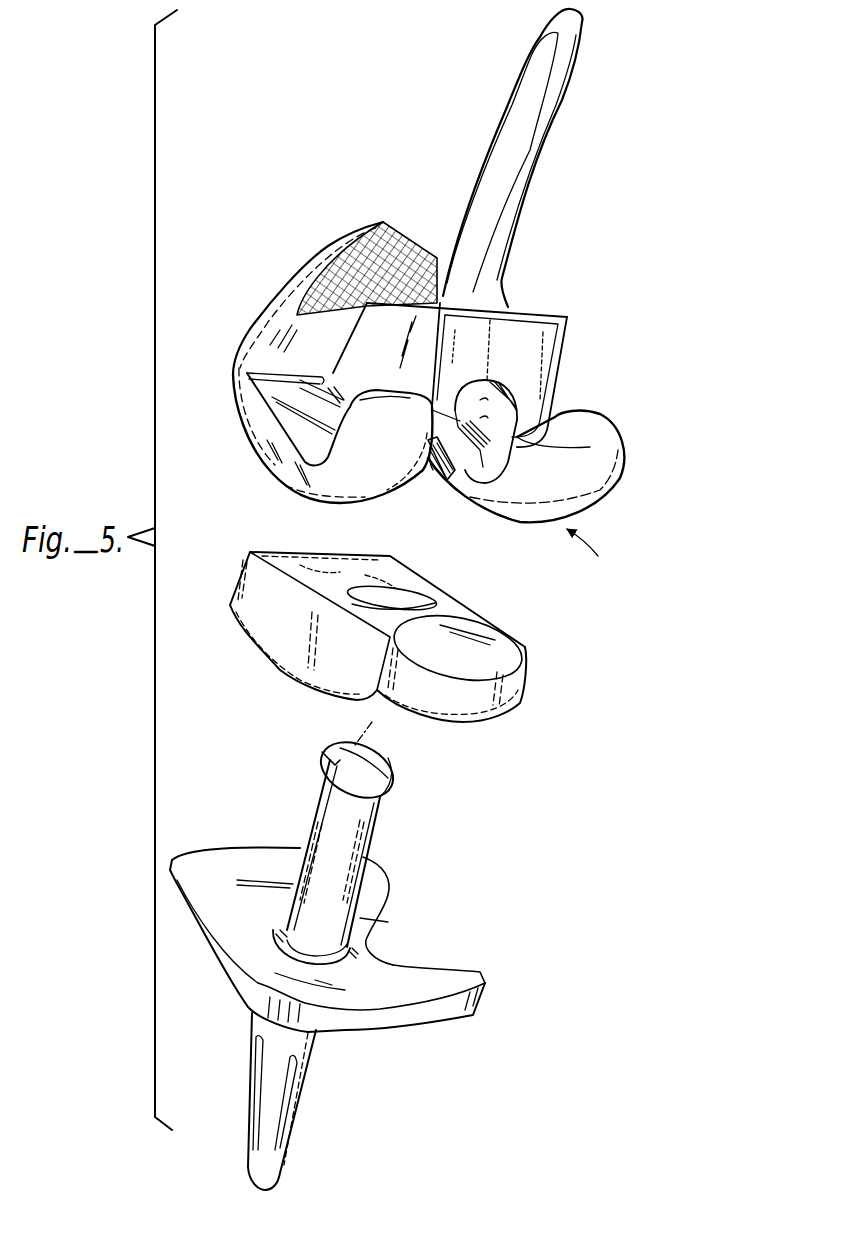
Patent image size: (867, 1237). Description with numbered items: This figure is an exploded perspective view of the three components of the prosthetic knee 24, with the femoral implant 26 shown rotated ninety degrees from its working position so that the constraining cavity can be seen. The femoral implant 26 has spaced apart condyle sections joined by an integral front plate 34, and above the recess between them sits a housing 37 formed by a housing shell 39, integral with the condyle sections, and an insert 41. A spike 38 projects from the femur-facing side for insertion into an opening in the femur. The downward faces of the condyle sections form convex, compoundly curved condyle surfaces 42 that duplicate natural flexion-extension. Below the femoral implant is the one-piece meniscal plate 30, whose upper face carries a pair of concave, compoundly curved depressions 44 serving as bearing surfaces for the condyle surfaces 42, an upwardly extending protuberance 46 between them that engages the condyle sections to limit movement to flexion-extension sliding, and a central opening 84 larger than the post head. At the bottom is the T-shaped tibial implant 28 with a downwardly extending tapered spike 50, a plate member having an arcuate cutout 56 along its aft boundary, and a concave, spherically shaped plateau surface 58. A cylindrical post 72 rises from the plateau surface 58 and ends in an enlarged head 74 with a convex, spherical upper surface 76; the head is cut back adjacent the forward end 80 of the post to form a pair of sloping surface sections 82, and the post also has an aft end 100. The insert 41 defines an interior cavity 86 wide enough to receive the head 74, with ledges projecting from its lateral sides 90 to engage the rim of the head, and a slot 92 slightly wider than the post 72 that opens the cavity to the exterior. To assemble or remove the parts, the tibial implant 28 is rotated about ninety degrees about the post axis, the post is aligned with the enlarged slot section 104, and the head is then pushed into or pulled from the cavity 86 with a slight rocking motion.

The prosthetic knee 24 is at (472, 297).
The femoral implant 26 is at (326, 247).
The tibial implant 28 is at (324, 960).
The meniscal plate 30 is at (417, 648).
The front plate 34 is at (290, 280).
The housing 37 is at (540, 306).
The spike 38 is at (547, 158).
The housing shell 39 is at (383, 347).
The insert 41 is at (520, 335).
The condyle surfaces 42 is at (240, 420).
The depressions 44 is at (347, 578).
The protuberance 46 is at (443, 605).
The spike 50 is at (283, 1133).
The arcuate cutout 56 is at (375, 893).
The plateau surface 58 is at (198, 873).
The cylindrical post 72 is at (342, 853).
The head 74 is at (390, 783).
The upper surface 76 is at (370, 772).
The forward end 80 is at (318, 830).
The sloping surface sections 82 is at (328, 767).
The opening 84 is at (412, 597).
The interior cavity 86 is at (485, 398).
The lateral sides 90 is at (487, 418).
The slot 92 is at (500, 455).
The aft end 100 is at (365, 920).
The enlarged slot section 104 is at (430, 467).